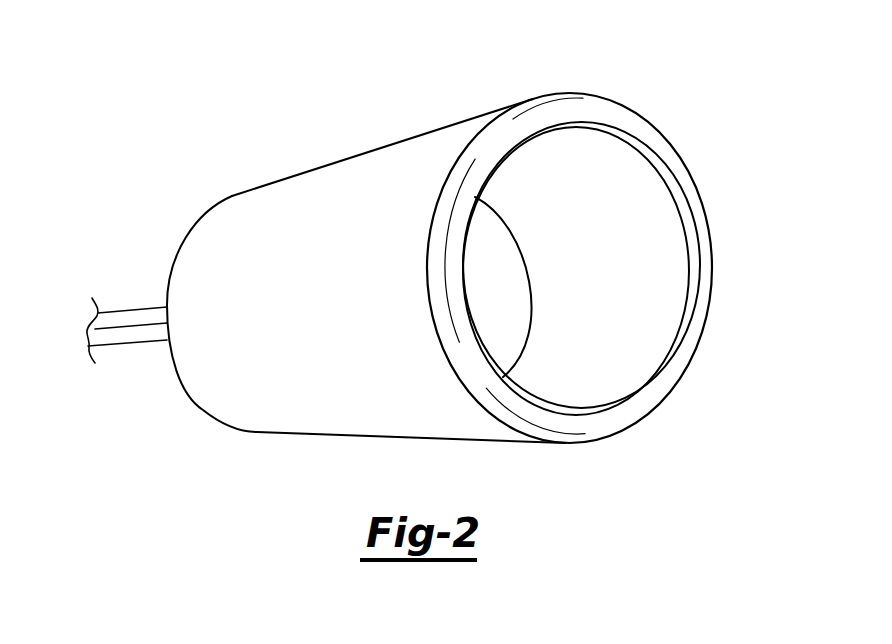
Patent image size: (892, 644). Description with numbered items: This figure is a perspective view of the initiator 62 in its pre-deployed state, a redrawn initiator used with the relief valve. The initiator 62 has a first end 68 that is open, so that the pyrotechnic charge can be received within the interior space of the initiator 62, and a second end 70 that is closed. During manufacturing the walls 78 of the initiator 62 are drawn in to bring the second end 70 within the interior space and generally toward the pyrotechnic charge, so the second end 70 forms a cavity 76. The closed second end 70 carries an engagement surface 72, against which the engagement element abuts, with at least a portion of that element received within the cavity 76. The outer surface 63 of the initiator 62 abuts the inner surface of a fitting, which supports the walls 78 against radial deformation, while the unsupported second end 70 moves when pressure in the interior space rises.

The initiator 62 is at (604, 93).
The outer surface 63 is at (296, 246).
The first end 68 is at (180, 380).
The second end 70 is at (503, 243).
The engagement surface 72 is at (500, 297).
The cavity 76 is at (665, 287).
The walls 78 is at (337, 160).